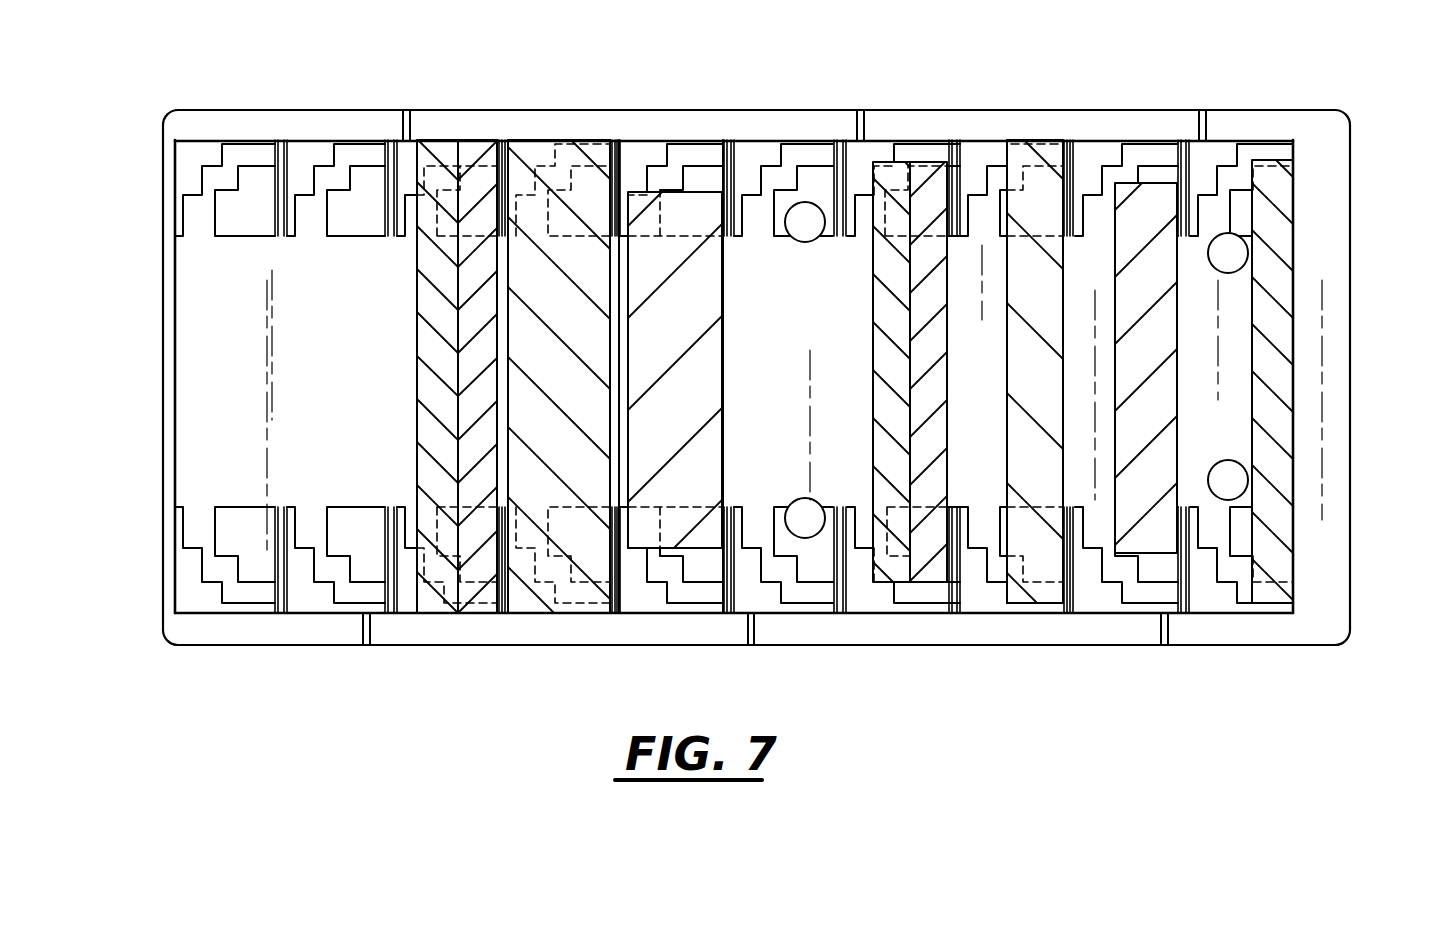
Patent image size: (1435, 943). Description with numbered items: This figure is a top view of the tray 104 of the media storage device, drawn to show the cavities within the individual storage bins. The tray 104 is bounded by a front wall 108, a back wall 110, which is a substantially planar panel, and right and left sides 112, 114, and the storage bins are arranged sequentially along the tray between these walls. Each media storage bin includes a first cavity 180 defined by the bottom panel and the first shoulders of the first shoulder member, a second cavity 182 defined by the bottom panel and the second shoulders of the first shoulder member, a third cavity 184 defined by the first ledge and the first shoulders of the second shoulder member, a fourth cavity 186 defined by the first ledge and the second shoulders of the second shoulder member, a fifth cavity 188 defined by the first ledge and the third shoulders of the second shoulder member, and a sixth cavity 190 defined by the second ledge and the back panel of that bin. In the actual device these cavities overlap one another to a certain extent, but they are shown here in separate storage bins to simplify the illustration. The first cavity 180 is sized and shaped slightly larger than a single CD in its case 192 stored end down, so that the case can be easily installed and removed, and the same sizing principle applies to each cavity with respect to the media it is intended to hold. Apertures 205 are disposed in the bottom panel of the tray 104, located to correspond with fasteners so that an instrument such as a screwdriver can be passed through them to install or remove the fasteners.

The tray 104 is at (330, 104).
The front wall 108 is at (1293, 176).
The back wall 110 is at (164, 257).
The right side 112 is at (736, 110).
The left side 114 is at (978, 627).
The first cavity 180 is at (1272, 173).
The second cavity 182 is at (1152, 200).
The third cavity 184 is at (1047, 147).
The fourth cavity 186 is at (887, 173).
The fifth cavity 188 is at (682, 213).
The sixth cavity 190 is at (450, 168).
The CD in its case 192 is at (1277, 320).
The apertures 205 is at (805, 210).